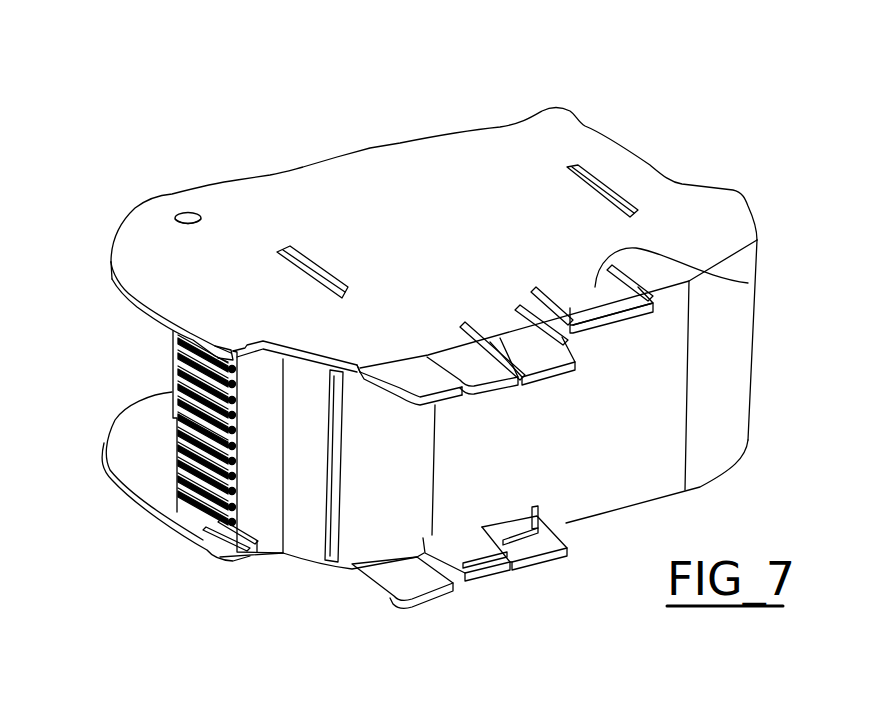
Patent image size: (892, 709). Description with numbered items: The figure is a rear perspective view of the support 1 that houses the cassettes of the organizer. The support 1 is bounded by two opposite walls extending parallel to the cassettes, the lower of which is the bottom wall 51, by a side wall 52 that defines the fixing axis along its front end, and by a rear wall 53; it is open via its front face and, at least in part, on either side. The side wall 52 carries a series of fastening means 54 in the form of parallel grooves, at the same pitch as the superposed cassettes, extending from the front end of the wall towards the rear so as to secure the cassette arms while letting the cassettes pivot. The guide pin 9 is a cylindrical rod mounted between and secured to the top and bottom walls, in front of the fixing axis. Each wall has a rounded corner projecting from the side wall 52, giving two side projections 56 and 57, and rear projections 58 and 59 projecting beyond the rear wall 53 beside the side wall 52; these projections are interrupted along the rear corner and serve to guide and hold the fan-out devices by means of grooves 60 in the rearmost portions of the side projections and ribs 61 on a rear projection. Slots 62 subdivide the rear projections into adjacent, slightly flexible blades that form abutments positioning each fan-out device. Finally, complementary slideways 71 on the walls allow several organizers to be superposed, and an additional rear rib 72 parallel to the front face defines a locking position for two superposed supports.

The support 1 is at (714, 171).
The guide pin 9 is at (167, 358).
The bottom wall 51 is at (563, 141).
The side wall 52 is at (265, 500).
The rear wall 53 is at (667, 441).
The fastening means 54 is at (174, 468).
The side projection 56 is at (167, 500).
The side projection 57 is at (157, 313).
The rear projection 58 is at (390, 577).
The rear projection 59 is at (413, 375).
The grooves 60 is at (210, 545).
The ribs 61 is at (533, 542).
The slots 62 is at (523, 378).
The slideway 71 is at (318, 262).
The additional rear rib 72 is at (748, 283).